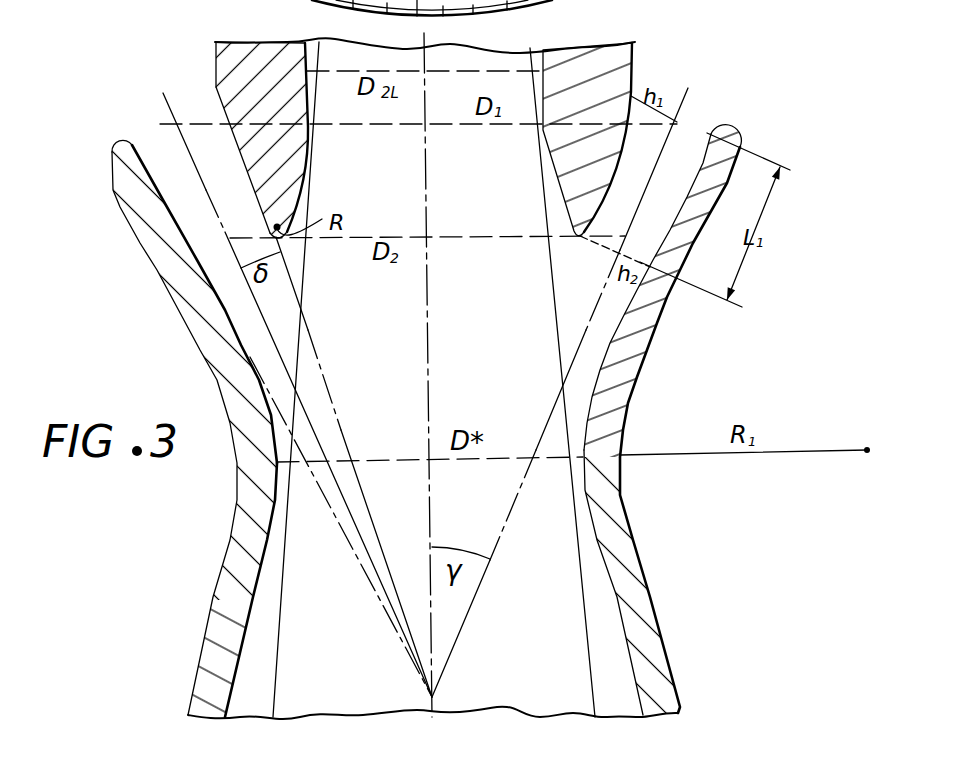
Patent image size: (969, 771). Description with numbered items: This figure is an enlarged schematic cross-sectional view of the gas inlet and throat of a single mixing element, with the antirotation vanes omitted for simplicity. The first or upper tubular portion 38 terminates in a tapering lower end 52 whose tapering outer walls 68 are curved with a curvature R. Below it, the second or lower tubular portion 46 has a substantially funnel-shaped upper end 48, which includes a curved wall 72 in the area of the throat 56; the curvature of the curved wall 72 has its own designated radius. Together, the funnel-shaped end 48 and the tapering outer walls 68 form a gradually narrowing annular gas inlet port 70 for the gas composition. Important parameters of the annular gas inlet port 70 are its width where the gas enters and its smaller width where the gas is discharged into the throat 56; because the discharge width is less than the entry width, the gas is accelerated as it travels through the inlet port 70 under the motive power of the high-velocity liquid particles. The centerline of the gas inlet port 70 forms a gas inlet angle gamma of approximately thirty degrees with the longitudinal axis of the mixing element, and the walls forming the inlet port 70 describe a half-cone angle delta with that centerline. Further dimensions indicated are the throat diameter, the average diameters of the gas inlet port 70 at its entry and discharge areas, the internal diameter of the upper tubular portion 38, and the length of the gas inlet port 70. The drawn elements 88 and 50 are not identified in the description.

The annular ring 88 is at (390, 8).
The upper tubular portion 38 is at (282, 55).
The tapering outer walls 68 is at (250, 197).
The lower end of the upper portion 52 is at (275, 196).
The annular gas inlet port 70 is at (170, 174).
The funnel-shaped upper end 48 is at (135, 204).
The lower tubular portion 46 is at (201, 681).
The nozzle inlet wall 50 is at (677, 150).
The throat 56 is at (408, 450).
The curved wall 72 is at (585, 437).